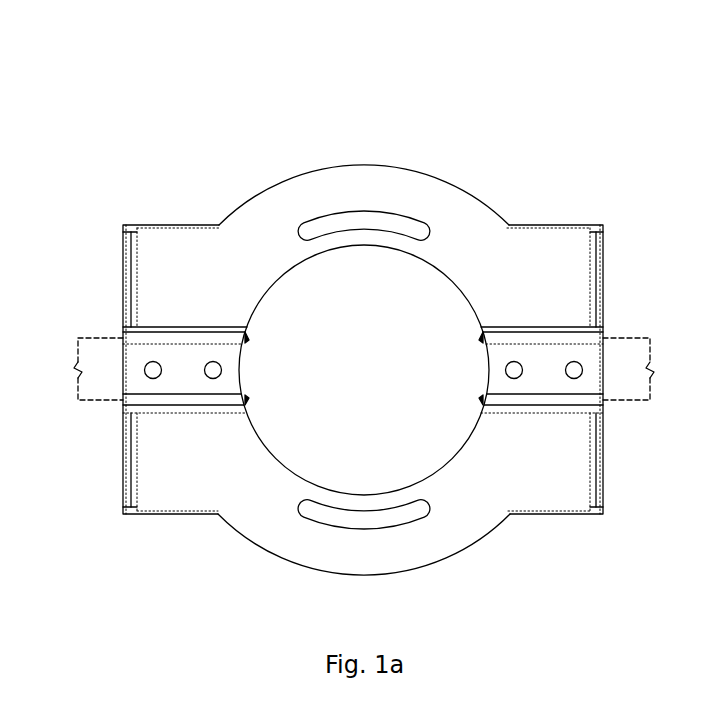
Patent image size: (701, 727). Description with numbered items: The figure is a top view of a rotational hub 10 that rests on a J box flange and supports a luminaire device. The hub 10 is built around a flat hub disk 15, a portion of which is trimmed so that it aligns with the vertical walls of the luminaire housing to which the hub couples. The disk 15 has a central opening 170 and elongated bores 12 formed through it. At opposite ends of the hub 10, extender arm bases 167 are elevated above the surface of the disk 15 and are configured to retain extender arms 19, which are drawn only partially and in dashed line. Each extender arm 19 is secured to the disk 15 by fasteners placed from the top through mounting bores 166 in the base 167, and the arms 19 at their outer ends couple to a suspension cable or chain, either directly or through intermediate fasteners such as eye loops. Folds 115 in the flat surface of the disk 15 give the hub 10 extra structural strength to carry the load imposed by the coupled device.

The hub 10 is at (227, 96).
The elongated bore 12 is at (365, 211).
The hub disk 15 is at (466, 540).
The extender arm 19 is at (101, 337).
The folds 115 is at (341, 350).
The mounting bore 166 is at (153, 372).
The extender arm base 167 is at (183, 371).
The central opening 170 is at (437, 371).